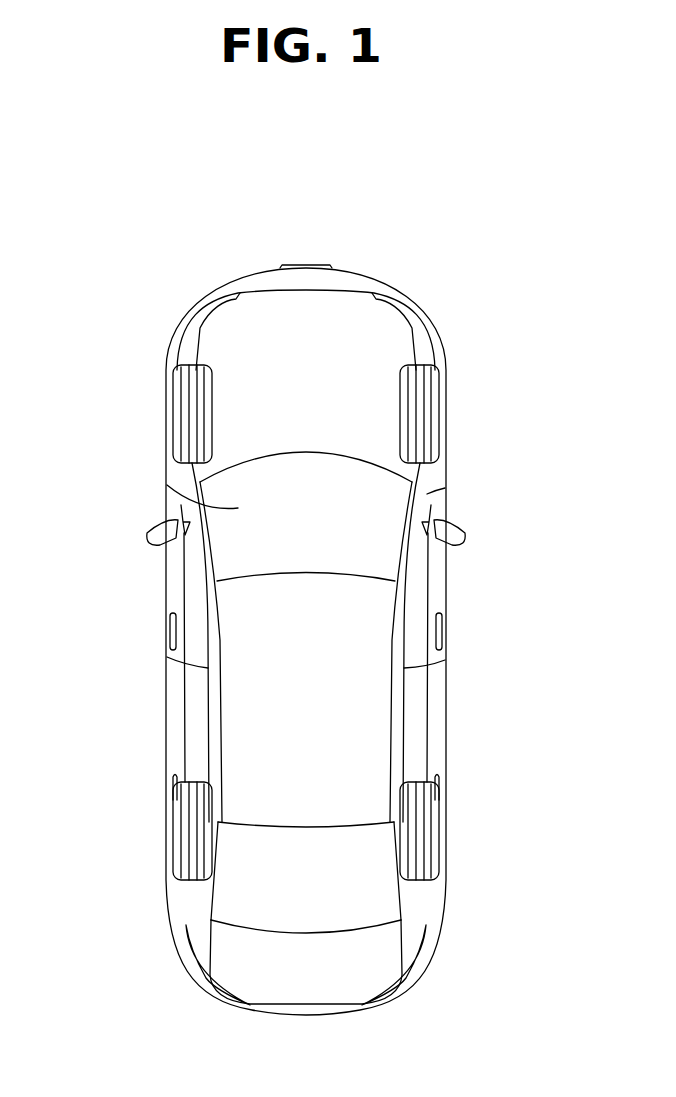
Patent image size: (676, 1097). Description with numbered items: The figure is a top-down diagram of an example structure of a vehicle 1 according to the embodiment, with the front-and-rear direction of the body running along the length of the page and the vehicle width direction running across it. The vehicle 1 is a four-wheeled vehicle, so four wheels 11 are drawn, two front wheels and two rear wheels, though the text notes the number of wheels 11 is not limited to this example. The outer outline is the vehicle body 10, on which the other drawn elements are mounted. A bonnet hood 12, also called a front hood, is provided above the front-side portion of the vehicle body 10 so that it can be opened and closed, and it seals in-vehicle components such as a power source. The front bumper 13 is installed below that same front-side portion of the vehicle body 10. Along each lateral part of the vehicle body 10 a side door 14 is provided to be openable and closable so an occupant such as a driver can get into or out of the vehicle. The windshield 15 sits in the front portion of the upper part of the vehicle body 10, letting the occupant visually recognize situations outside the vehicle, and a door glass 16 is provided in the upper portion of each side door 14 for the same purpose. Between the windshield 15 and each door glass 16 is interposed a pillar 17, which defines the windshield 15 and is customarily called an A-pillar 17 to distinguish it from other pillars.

The vehicle 1 is at (140, 289).
The vehicle body 10 is at (167, 750).
The wheels 11 is at (442, 380).
The bonnet hood 12 is at (332, 338).
The front bumper 13 is at (414, 288).
The side doors 14 is at (437, 577).
The windshield 15 is at (237, 508).
The door glasses 16 is at (420, 614).
The pillars 17 is at (410, 527).